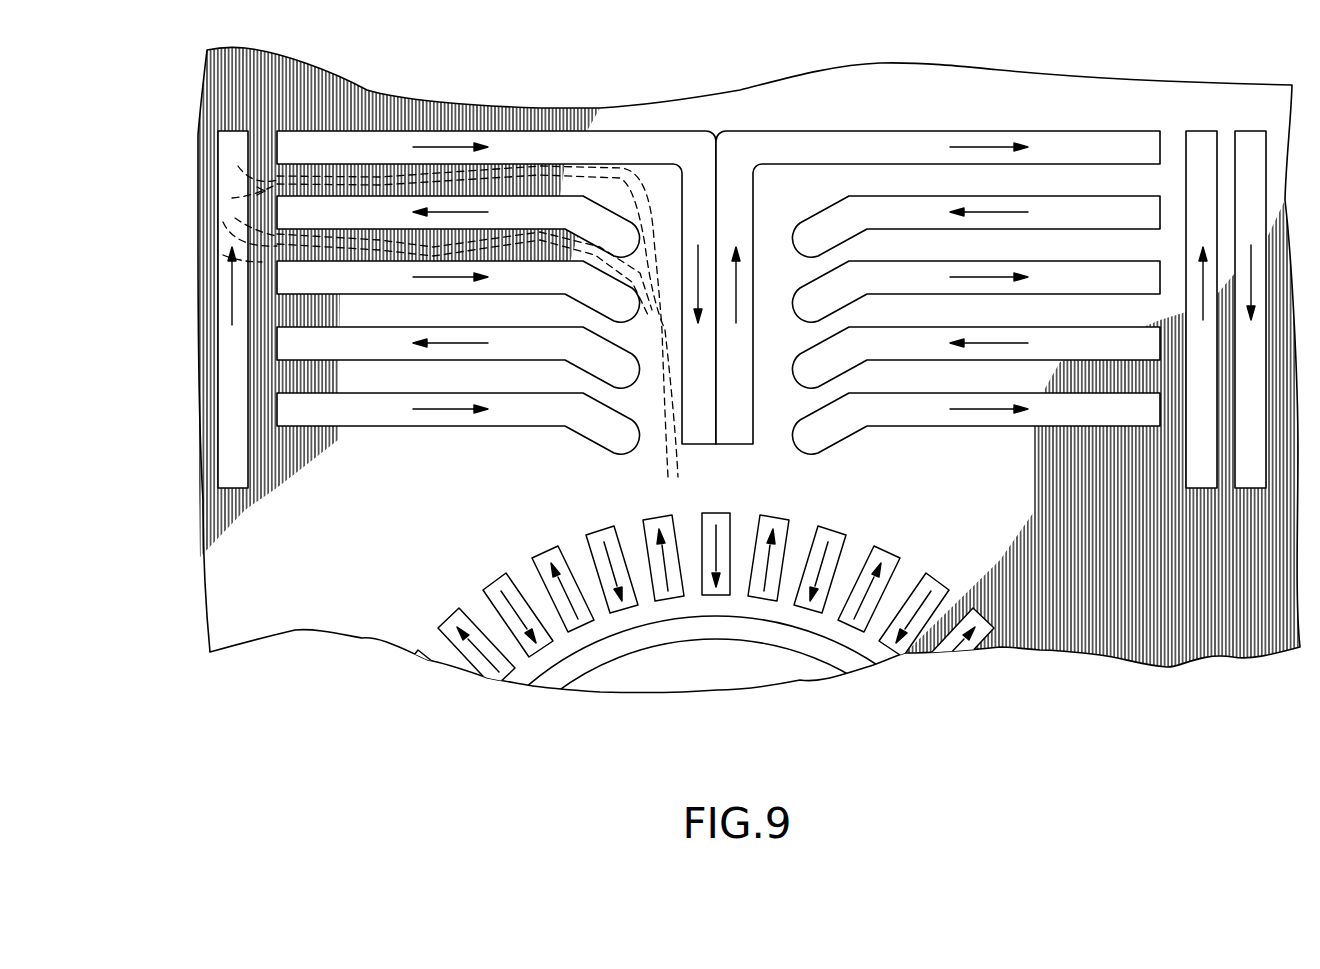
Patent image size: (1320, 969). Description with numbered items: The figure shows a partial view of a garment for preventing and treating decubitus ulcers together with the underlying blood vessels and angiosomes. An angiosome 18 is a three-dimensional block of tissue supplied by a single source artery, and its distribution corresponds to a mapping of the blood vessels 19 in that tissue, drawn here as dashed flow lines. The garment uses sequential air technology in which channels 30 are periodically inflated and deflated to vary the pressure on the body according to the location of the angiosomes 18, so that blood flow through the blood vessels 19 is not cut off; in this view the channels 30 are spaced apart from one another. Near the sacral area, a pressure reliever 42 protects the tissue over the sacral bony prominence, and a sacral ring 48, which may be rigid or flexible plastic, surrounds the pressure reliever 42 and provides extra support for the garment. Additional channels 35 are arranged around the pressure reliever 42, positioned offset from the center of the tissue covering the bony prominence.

The angiosome 18 is at (641, 197).
The blood vessels 19 is at (385, 178).
The channels 30 is at (547, 147).
The channels 35 is at (987, 647).
The pressure reliever 42 is at (727, 680).
The sacral ring 48 is at (862, 668).